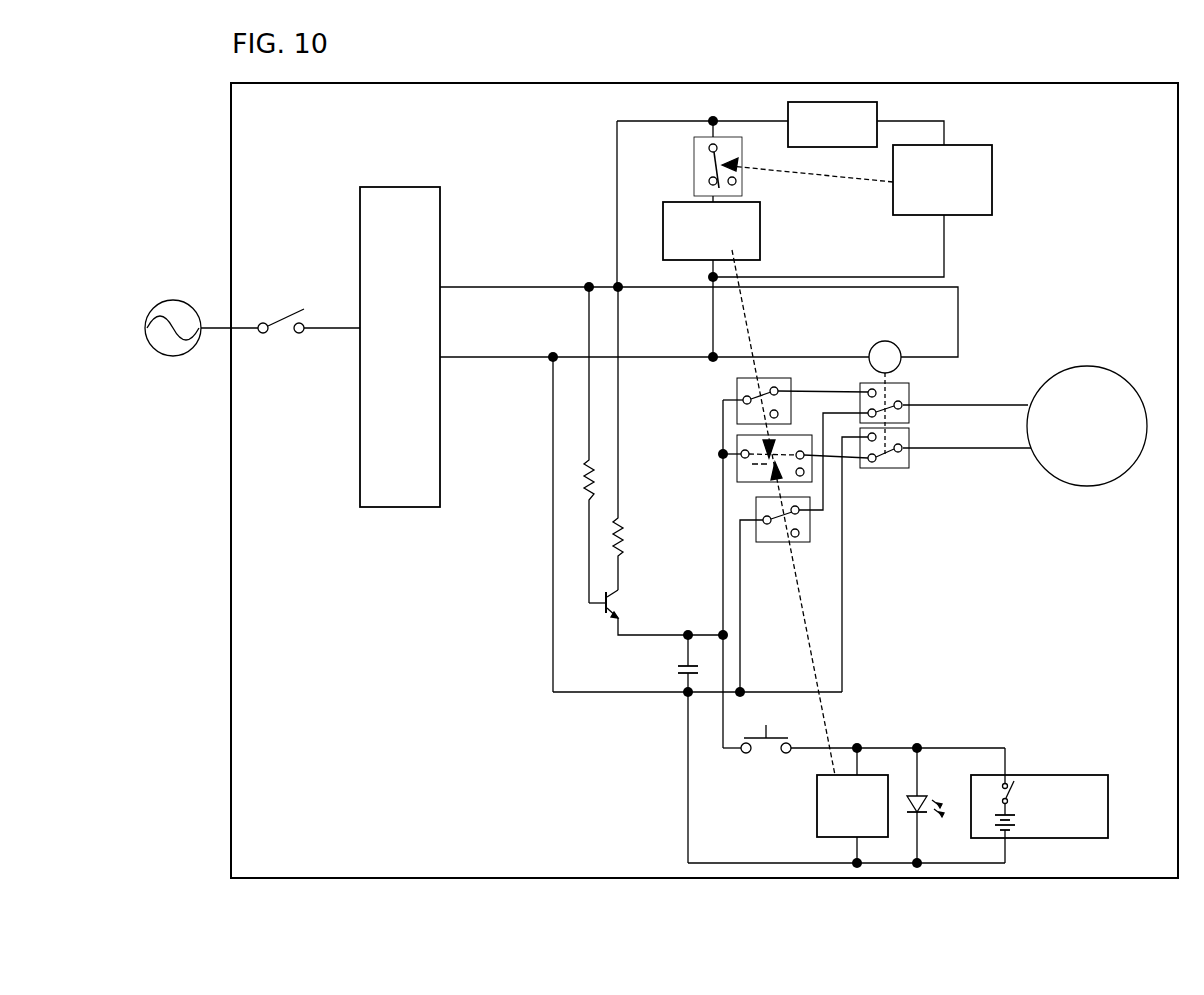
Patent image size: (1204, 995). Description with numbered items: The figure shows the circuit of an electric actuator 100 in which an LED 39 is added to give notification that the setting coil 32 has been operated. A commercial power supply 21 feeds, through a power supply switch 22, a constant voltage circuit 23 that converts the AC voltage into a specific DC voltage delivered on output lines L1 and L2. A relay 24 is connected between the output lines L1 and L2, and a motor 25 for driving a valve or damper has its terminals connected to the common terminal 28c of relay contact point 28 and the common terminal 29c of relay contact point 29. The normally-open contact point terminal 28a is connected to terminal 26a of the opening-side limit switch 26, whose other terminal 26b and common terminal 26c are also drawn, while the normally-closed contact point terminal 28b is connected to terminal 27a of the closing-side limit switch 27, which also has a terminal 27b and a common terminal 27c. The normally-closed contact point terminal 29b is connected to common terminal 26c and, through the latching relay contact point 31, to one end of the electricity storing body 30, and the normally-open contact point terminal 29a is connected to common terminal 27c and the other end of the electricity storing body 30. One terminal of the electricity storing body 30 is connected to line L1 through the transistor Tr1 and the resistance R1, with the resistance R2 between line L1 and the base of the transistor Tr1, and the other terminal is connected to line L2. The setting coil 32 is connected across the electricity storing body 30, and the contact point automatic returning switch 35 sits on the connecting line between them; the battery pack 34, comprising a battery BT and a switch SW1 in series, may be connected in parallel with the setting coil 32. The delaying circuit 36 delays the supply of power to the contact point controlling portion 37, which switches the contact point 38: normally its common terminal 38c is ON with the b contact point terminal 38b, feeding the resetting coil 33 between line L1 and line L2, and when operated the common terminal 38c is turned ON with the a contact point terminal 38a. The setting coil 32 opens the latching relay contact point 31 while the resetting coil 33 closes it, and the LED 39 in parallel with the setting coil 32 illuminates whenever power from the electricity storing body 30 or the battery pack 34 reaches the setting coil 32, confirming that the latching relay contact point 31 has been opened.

The electric actuator 100 is at (231, 143).
The commercial power supply 21 is at (175, 300).
The power supply switch 22 is at (280, 340).
The constant voltage circuit 23 is at (440, 194).
The output line L1 is at (476, 286).
The output line L2 is at (477, 356).
The relay 24 is at (896, 348).
The motor 25 is at (1108, 374).
The opening-side limit switch 26 is at (761, 399).
The terminal 26a is at (778, 389).
The terminal 26b is at (770, 414).
The common terminal 26c is at (742, 398).
The closing-side limit switch 27 is at (780, 552).
The terminal 27a is at (799, 511).
The terminal 27b is at (797, 537).
The common terminal 27c is at (763, 519).
The relay contact point 28 is at (901, 402).
The normally-open contact point terminal 28a is at (868, 391).
The normally-closed contact point terminal 28b is at (868, 412).
The common terminal 28c is at (901, 408).
The relay contact point 29 is at (910, 560).
The normally-open contact point terminal 29a is at (878, 436).
The normally-closed contact point terminal 29b is at (871, 462).
The common terminal 29c is at (901, 451).
The electricity storing body 30 is at (676, 668).
The latching relay contact point 31 is at (733, 472).
The setting coil 32 is at (817, 814).
The resetting coil 33 is at (760, 250).
The battery pack 34 is at (1036, 795).
The contact point automatic returning switch 35 is at (764, 752).
The delaying circuit 36 is at (836, 147).
The contact point controlling portion 37 is at (992, 168).
The contact point 38 is at (722, 162).
The a contact point terminal 38a is at (736, 182).
The b contact point terminal 38b is at (709, 181).
The common terminal 38c is at (718, 150).
The LED 39 is at (922, 795).
The resistance R1 is at (637, 438).
The resistance R2 is at (576, 445).
The transistor Tr1 is at (656, 612).
The switch SW1 is at (1003, 783).
The battery BT is at (1015, 828).